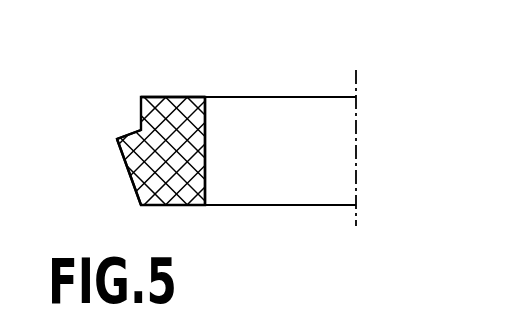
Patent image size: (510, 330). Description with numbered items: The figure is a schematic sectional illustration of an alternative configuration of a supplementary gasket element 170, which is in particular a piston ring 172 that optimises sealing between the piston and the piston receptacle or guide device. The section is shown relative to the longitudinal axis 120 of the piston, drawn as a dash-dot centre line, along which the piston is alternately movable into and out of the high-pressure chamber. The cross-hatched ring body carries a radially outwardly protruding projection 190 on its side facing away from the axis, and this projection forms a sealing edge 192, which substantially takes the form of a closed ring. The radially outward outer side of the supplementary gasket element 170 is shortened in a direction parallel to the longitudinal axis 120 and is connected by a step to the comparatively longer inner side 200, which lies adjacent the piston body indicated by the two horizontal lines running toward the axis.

The longitudinal axis 120 is at (356, 88).
The supplementary gasket element 170 is at (190, 130).
The piston ring 172 is at (167, 133).
The radially outwardly protruding projection 190 is at (117, 138).
The sealing edge 192 is at (116, 139).
The inner side 200 is at (205, 172).